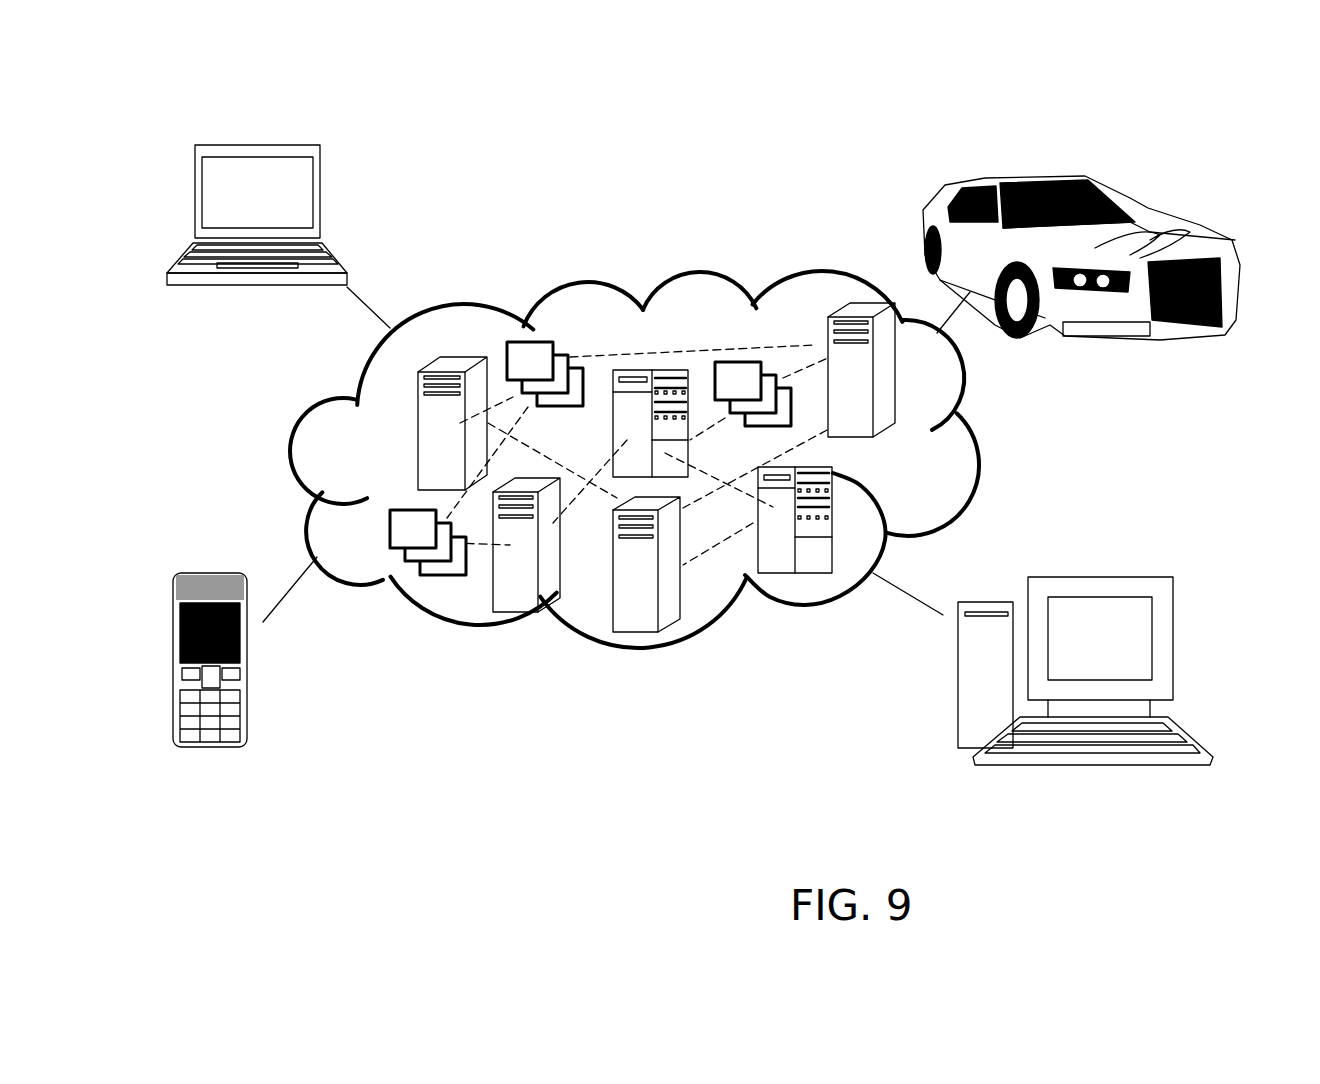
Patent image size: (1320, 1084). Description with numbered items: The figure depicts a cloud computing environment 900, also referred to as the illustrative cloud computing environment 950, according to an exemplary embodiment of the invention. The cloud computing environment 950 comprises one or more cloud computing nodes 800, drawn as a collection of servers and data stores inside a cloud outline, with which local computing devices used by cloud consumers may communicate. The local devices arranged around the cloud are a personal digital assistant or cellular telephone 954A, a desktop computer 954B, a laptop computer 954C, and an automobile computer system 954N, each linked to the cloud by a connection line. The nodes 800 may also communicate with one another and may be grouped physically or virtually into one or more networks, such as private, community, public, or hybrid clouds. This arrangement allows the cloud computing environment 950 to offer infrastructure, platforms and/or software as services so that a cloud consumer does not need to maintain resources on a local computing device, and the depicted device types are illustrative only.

The cloud computing environment 900 is at (1105, 111).
The cloud computing environment 950 is at (983, 442).
The cloud computing nodes 800 is at (905, 458).
The cellular telephone 954A is at (262, 688).
The desktop computer 954B is at (982, 672).
The laptop computer 954C is at (333, 223).
The automobile computer system 954N is at (915, 210).